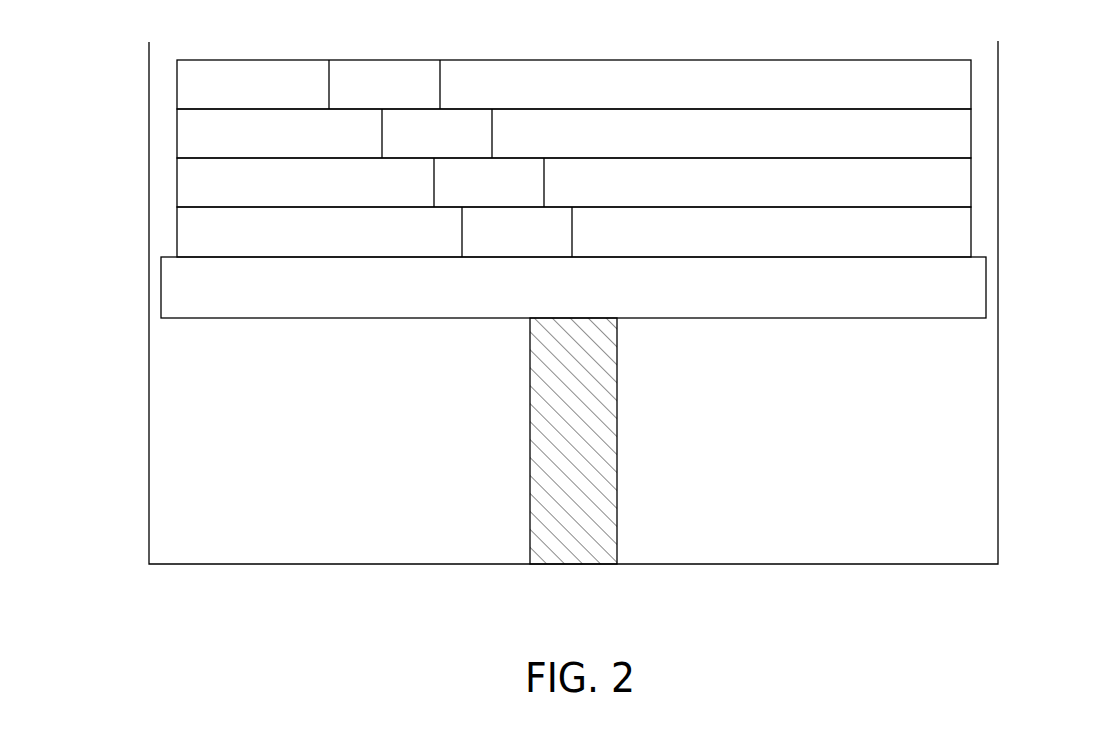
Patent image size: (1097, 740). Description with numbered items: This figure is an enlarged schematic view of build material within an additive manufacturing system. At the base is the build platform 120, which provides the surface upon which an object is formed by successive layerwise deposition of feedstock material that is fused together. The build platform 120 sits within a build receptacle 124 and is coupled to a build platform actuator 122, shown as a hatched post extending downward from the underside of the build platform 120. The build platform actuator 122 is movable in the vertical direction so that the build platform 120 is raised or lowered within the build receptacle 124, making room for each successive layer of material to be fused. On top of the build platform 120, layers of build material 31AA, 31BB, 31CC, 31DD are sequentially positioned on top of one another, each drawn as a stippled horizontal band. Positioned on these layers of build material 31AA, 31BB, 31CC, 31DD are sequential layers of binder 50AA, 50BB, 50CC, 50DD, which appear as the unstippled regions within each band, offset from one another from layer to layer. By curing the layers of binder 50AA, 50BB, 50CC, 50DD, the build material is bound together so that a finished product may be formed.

The layer of build material 31DD is at (963, 83).
The layer of build material 31CC is at (963, 133).
The layer of build material 31BB is at (963, 182).
The layer of build material 31AA is at (963, 232).
The layer of binder 50DD is at (375, 78).
The layer of binder 50CC is at (473, 123).
The layer of binder 50BB is at (530, 170).
The layer of binder 50AA is at (487, 238).
The build platform 120 is at (978, 280).
The build platform actuator 122 is at (618, 550).
The build receptacle 124 is at (369, 506).